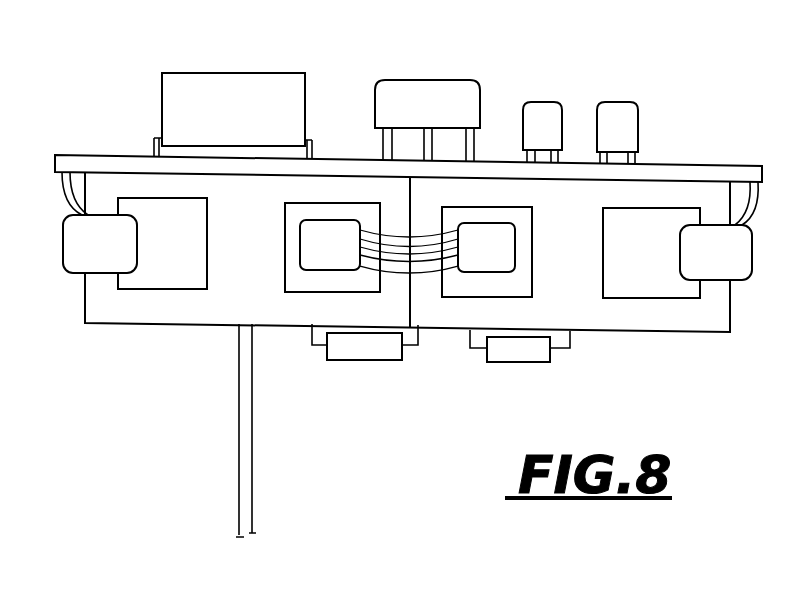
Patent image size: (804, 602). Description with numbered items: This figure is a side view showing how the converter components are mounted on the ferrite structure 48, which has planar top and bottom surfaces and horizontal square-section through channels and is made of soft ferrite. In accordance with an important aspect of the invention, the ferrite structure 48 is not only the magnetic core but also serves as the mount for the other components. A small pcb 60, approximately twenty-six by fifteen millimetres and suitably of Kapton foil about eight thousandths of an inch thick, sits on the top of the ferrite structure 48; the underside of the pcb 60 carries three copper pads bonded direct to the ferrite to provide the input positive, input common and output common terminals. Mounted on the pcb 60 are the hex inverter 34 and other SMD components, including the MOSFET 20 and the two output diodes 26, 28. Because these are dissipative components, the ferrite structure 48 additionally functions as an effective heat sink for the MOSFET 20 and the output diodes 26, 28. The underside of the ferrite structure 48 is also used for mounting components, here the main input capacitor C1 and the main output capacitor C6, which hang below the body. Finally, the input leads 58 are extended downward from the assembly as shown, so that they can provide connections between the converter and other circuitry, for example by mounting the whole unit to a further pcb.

The MOSFET 20 is at (427, 95).
The output diode 26 is at (541, 107).
The output diode 28 is at (613, 115).
The hex inverter 34 is at (263, 97).
The ferrite structure 48 is at (683, 352).
The input leads 58 is at (252, 500).
The pcb 60 is at (120, 163).
The main input capacitor C1 is at (374, 350).
The main output capacitor C6 is at (522, 352).